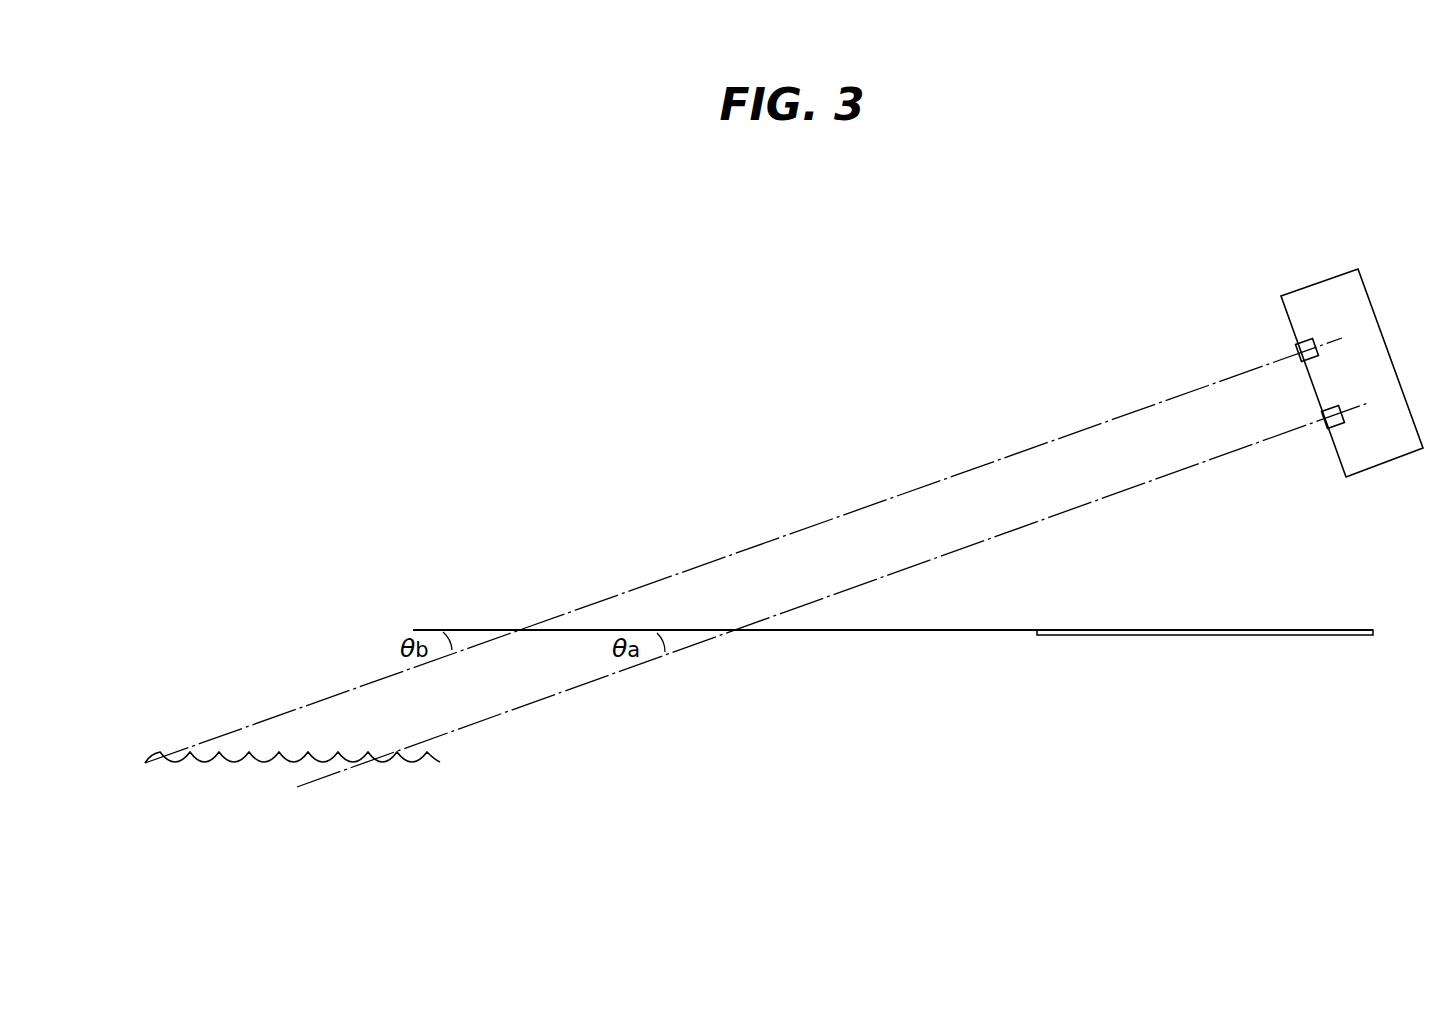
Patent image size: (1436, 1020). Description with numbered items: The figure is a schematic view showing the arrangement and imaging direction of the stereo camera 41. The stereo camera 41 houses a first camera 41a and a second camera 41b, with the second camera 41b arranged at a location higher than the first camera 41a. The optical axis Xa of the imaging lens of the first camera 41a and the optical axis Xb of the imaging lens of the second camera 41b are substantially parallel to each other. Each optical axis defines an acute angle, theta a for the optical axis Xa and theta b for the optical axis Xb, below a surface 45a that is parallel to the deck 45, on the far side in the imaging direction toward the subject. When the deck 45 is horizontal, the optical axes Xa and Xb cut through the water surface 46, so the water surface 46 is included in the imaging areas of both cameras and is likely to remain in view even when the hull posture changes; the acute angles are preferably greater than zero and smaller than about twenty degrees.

The stereo camera 41 is at (1338, 254).
The first camera 41a is at (1323, 430).
The second camera 41b is at (1296, 346).
The deck 45 is at (1105, 630).
The surface parallel to the deck 45a is at (960, 630).
The water surface 46 is at (297, 760).
The optical axis of the imaging lens of the first camera Xa is at (1177, 473).
The optical axis of the imaging lens of the second camera Xb is at (1033, 446).